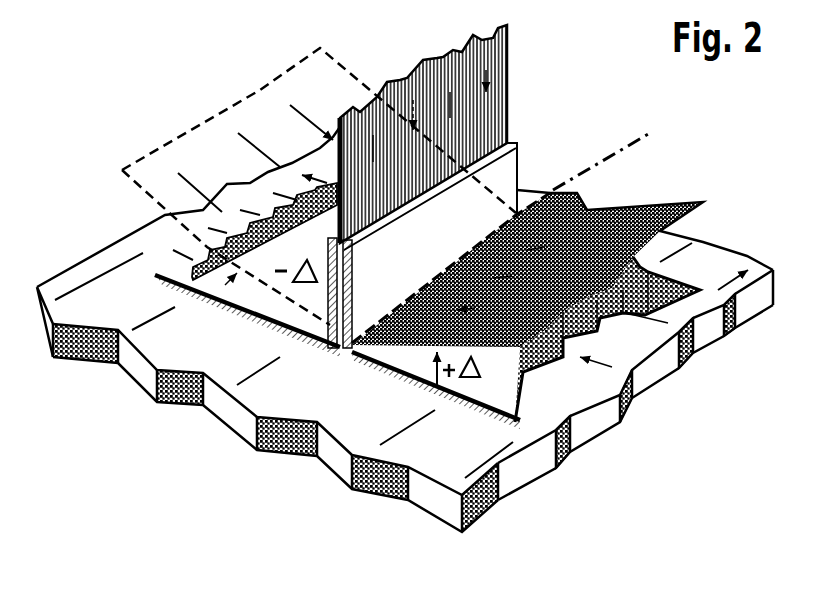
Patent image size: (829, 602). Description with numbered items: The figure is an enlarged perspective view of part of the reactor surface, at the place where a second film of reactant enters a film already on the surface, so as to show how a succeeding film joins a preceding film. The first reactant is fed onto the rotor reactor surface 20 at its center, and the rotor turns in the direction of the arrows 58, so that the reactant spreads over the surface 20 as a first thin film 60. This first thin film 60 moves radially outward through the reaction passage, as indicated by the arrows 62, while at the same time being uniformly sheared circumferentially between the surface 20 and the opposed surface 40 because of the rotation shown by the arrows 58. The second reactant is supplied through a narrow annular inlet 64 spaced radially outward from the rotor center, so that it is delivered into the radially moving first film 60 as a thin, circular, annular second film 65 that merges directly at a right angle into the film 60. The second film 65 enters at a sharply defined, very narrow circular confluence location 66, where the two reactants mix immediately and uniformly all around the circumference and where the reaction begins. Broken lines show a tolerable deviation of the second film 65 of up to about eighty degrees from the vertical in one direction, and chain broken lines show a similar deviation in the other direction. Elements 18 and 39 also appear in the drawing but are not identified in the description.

The substrate plate 18 is at (483, 495).
The rotor reactor surface 20 is at (573, 397).
The boundary ridge line 39 is at (448, 395).
The surface 40 is at (615, 358).
The arrows 58 is at (110, 268).
The first thin film 60 is at (522, 415).
The arrows 62 is at (632, 316).
The annular inlet 64 is at (355, 297).
The second film 65 is at (335, 64).
The confluence location 66 is at (336, 355).